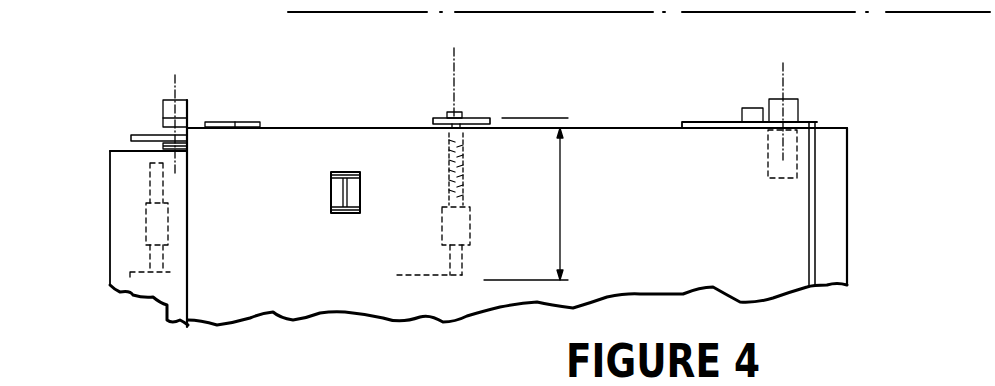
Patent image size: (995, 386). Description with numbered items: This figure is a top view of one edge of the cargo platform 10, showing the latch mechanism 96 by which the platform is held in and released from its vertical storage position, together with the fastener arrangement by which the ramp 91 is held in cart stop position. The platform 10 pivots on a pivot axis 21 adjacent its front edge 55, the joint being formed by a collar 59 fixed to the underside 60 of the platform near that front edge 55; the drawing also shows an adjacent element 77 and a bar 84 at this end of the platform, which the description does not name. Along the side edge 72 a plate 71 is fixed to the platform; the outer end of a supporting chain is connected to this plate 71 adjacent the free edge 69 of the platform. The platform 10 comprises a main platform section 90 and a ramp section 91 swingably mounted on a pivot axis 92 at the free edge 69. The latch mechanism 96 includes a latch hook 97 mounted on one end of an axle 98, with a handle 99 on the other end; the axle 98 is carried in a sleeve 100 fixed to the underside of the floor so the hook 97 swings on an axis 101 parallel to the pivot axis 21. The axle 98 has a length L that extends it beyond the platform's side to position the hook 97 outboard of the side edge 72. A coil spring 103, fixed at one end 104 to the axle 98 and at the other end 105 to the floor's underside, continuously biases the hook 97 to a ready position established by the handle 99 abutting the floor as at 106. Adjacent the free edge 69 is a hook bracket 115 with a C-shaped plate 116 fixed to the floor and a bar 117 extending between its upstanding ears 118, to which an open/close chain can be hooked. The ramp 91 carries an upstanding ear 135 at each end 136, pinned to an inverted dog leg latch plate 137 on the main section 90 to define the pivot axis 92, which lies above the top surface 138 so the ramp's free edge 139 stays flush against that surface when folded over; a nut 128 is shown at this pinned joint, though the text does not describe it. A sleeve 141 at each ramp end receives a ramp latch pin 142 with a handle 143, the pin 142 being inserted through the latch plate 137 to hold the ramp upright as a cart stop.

The cargo platform 10 is at (678, 306).
The pivot axis 21 is at (785, 92).
The front edge 55 is at (818, 297).
The collar 59 is at (798, 112).
The underside 60 is at (787, 200).
The free edge 69 is at (188, 313).
The plate 71 is at (262, 123).
The side edge 72 is at (624, 127).
The end wall 77 is at (838, 170).
The bar 84 is at (742, 115).
The main platform section 90 is at (485, 303).
The ramp section 91 is at (110, 285).
The pivot axis 92 is at (177, 88).
The latch mechanism 96 is at (500, 68).
The latch hook 97 is at (438, 117).
The axle 98 is at (450, 258).
The handle 99 is at (395, 278).
The sleeve 100 is at (442, 224).
The axis 101 is at (453, 52).
The coil spring 103 is at (463, 170).
The one end 104 is at (447, 140).
The other end 105 is at (465, 205).
The abutment location 106 is at (395, 275).
The hook bracket 115 is at (330, 188).
The C-shaped plate 116 is at (331, 174).
The bar 117 is at (330, 200).
The upstanding ears 118 is at (370, 150).
The nut 128 is at (163, 103).
The upstanding ear 135 is at (182, 150).
The end 136 is at (112, 151).
The dog leg latch plate 137 is at (131, 135).
The top surface 138 is at (289, 304).
The free edge 139 is at (110, 243).
The sleeve 141 is at (168, 230).
The ramp latch pin 142 is at (163, 190).
The handle 143 is at (140, 278).
The length L is at (526, 199).